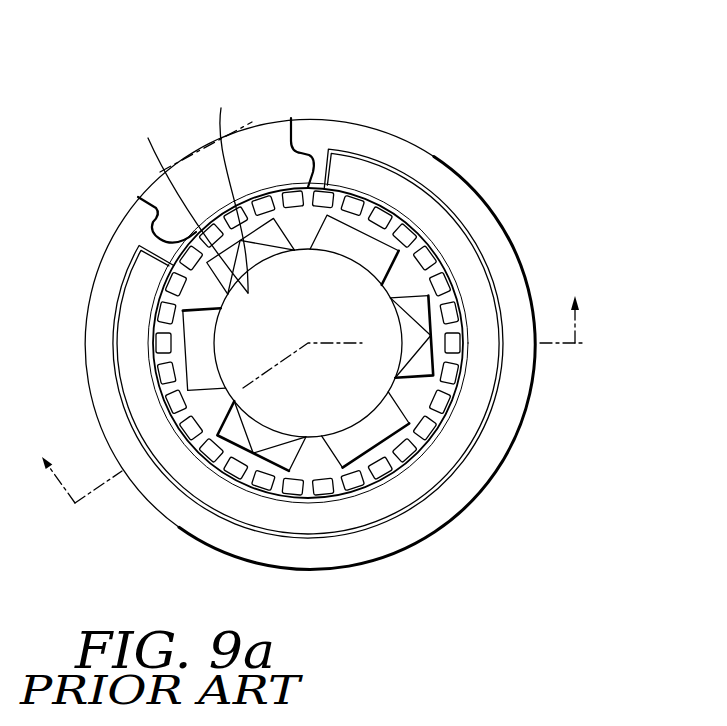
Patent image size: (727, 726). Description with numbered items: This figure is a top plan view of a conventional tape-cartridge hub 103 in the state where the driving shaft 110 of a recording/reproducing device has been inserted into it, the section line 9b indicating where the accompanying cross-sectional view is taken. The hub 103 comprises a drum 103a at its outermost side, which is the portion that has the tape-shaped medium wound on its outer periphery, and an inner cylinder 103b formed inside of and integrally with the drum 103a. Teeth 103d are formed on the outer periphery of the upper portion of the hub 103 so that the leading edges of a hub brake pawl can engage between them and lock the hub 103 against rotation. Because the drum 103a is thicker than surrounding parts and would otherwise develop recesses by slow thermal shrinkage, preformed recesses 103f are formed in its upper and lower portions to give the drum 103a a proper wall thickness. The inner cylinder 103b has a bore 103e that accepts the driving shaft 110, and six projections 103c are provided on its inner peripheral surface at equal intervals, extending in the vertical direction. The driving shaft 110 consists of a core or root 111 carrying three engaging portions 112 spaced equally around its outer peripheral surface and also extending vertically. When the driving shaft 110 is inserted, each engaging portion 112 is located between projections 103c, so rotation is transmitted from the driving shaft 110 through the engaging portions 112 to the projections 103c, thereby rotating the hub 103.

The hub 103 is at (442, 150).
The drum 103a is at (517, 253).
The inner cylinder 103b is at (405, 452).
The projections 103c is at (425, 399).
The teeth 103d is at (342, 460).
The bore 103e is at (370, 443).
The preformed recesses 103f is at (442, 218).
The driving shaft 110 is at (234, 62).
The core or root 111 is at (190, 196).
The engaging portions 112 is at (227, 181).
The line 9b— 9b is at (323, 407).